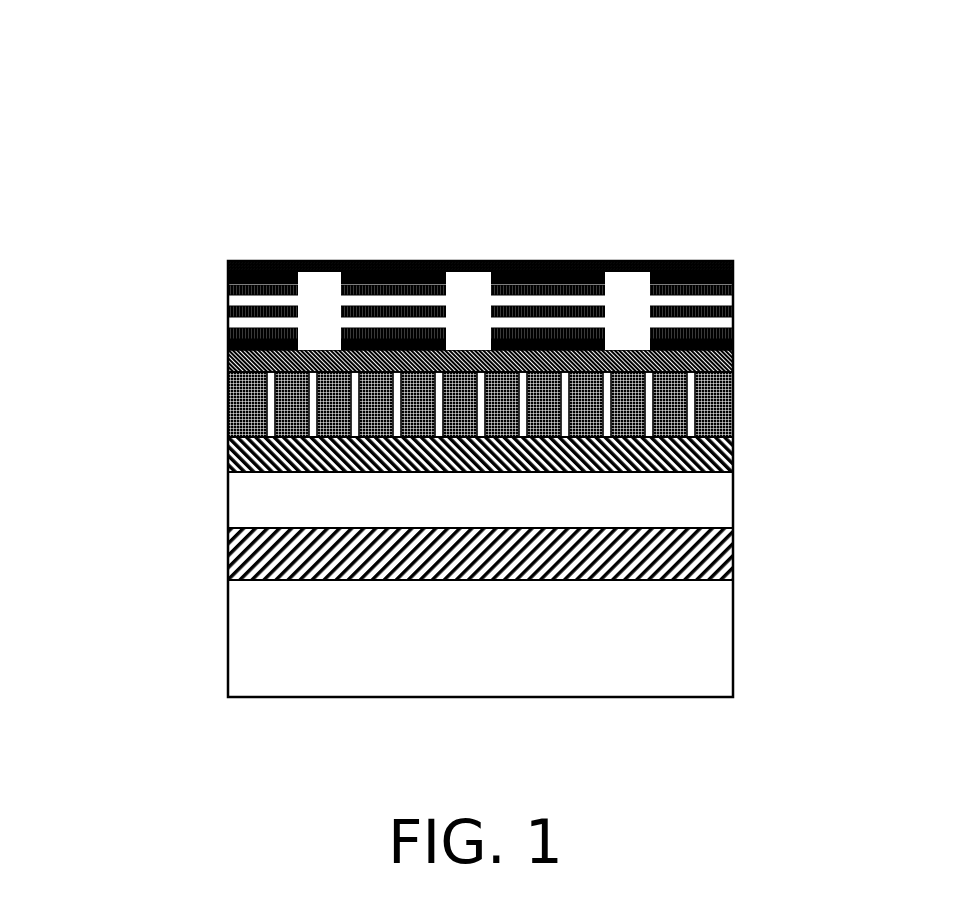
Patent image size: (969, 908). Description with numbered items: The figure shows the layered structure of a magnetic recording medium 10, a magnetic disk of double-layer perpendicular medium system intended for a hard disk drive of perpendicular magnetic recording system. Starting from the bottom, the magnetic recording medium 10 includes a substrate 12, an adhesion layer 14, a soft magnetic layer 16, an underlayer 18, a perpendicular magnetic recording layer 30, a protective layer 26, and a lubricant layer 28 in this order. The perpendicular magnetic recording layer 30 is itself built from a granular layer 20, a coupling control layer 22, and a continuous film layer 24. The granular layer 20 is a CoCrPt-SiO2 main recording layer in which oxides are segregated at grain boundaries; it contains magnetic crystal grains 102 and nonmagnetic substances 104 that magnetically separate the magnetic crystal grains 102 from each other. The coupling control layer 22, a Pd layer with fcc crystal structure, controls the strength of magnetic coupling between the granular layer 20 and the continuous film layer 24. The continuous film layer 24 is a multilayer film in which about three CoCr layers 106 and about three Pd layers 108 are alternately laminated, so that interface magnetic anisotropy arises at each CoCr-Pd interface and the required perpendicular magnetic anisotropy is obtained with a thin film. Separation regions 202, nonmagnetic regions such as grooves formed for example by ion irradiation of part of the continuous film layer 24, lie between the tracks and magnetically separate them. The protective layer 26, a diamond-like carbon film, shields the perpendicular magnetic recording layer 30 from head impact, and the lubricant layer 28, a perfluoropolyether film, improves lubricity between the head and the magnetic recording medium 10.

The magnetic recording medium 10 is at (862, 52).
The substrate 12 is at (734, 637).
The adhesion layer 14 is at (734, 548).
The soft magnetic layer 16 is at (734, 493).
The underlayer 18 is at (734, 450).
The granular layer 20 is at (474, 421).
The coupling control layer 22 is at (474, 395).
The continuous film layer 24 is at (140, 297).
The protective layer 26 is at (733, 277).
The lubricant layer 28 is at (733, 263).
The perpendicular magnetic recording layer 30 is at (67, 300).
The magnetic crystal grains 102 is at (733, 404).
The nonmagnetic substances 104 is at (733, 393).
The CoCr layer 106 is at (227, 348).
The Pd layer 108 is at (227, 335).
The separation regions 202 is at (322, 287).